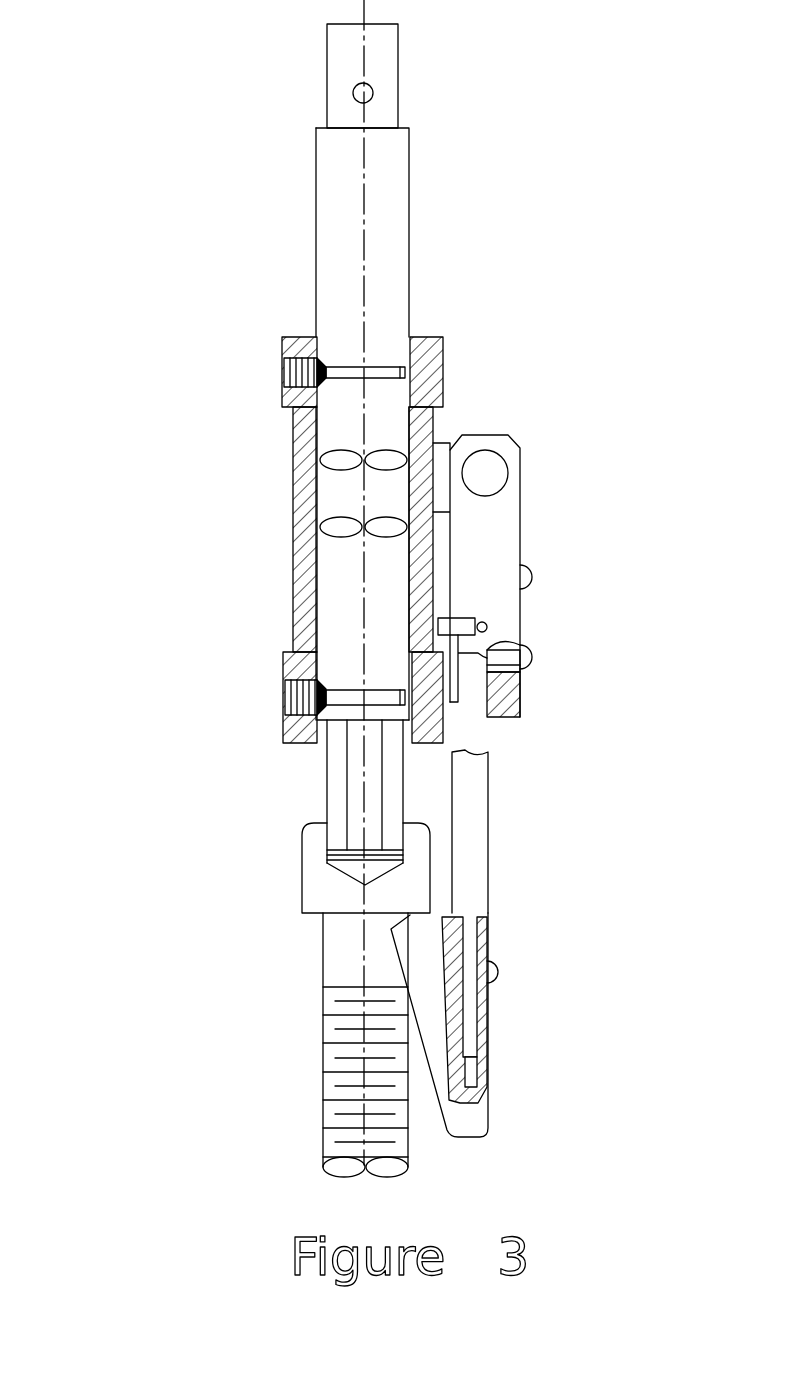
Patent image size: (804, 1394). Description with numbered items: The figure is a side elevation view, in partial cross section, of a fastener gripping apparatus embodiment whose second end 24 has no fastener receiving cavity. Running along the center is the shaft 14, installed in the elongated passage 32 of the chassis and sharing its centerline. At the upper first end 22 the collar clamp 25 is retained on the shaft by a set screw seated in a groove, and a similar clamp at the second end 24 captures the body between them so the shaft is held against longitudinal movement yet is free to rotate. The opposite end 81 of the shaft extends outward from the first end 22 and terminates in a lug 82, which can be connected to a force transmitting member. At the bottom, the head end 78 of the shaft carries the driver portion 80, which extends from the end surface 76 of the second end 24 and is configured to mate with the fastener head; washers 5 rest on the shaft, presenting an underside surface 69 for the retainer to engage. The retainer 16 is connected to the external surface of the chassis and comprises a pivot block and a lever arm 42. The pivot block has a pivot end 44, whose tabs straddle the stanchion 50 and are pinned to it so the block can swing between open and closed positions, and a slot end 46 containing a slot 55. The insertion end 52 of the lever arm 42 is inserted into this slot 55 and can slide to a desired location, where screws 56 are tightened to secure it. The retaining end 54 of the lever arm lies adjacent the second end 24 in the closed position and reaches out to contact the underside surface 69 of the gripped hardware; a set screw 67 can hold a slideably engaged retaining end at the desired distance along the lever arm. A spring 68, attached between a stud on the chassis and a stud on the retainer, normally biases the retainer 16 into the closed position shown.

The lug 82 is at (343, 62).
The opposite end 81 is at (315, 165).
The shaft 14 is at (409, 210).
The collar clamp 25 is at (447, 360).
The first end 22 is at (482, 348).
The passage 32 is at (348, 503).
The head end 78 is at (348, 620).
The end surface 76 is at (305, 742).
The second end 24 is at (210, 648).
The stanchion 50 is at (441, 442).
The pivot end 44 is at (515, 440).
The screws 56 is at (532, 566).
The spring 68 is at (458, 618).
The slot 55 is at (468, 685).
The retainer 16 is at (572, 720).
The slot end 46 is at (513, 710).
The driver portion 80 is at (330, 800).
The washers 5 is at (302, 862).
The underside surface 69 is at (313, 913).
The insertion end 52 is at (487, 823).
The lever arm 42 is at (487, 908).
The set screw 67 is at (496, 978).
The retaining end 54 is at (487, 1090).